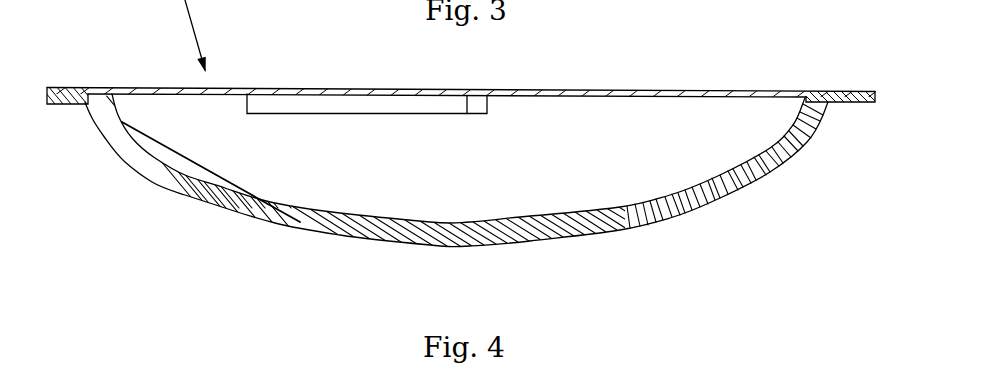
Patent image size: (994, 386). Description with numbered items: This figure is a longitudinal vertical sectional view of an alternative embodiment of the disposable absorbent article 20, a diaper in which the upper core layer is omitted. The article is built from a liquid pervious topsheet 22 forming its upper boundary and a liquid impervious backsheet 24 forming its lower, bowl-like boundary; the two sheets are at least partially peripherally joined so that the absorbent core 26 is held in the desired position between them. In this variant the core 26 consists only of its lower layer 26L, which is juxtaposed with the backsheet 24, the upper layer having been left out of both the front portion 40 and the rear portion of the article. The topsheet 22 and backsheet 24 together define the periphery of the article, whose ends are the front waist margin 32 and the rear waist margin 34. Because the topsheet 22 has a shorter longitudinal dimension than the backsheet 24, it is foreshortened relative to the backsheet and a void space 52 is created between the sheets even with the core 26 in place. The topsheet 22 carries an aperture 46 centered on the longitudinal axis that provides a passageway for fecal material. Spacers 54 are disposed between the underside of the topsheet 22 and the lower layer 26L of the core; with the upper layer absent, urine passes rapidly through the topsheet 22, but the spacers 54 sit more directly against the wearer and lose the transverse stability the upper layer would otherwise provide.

The disposable absorbent article 20 is at (640, 242).
The liquid pervious topsheet 22 is at (338, 88).
The liquid impervious backsheet 24 is at (337, 237).
The absorbent core 26 is at (185, 192).
The lower layer of the core 26L is at (730, 185).
The front waist margin 32 is at (850, 97).
The rear waist margin 34 is at (57, 90).
The front portion 40 is at (567, 82).
The aperture 46 is at (445, 88).
The void space 52 is at (477, 178).
The spacers 54 is at (267, 103).